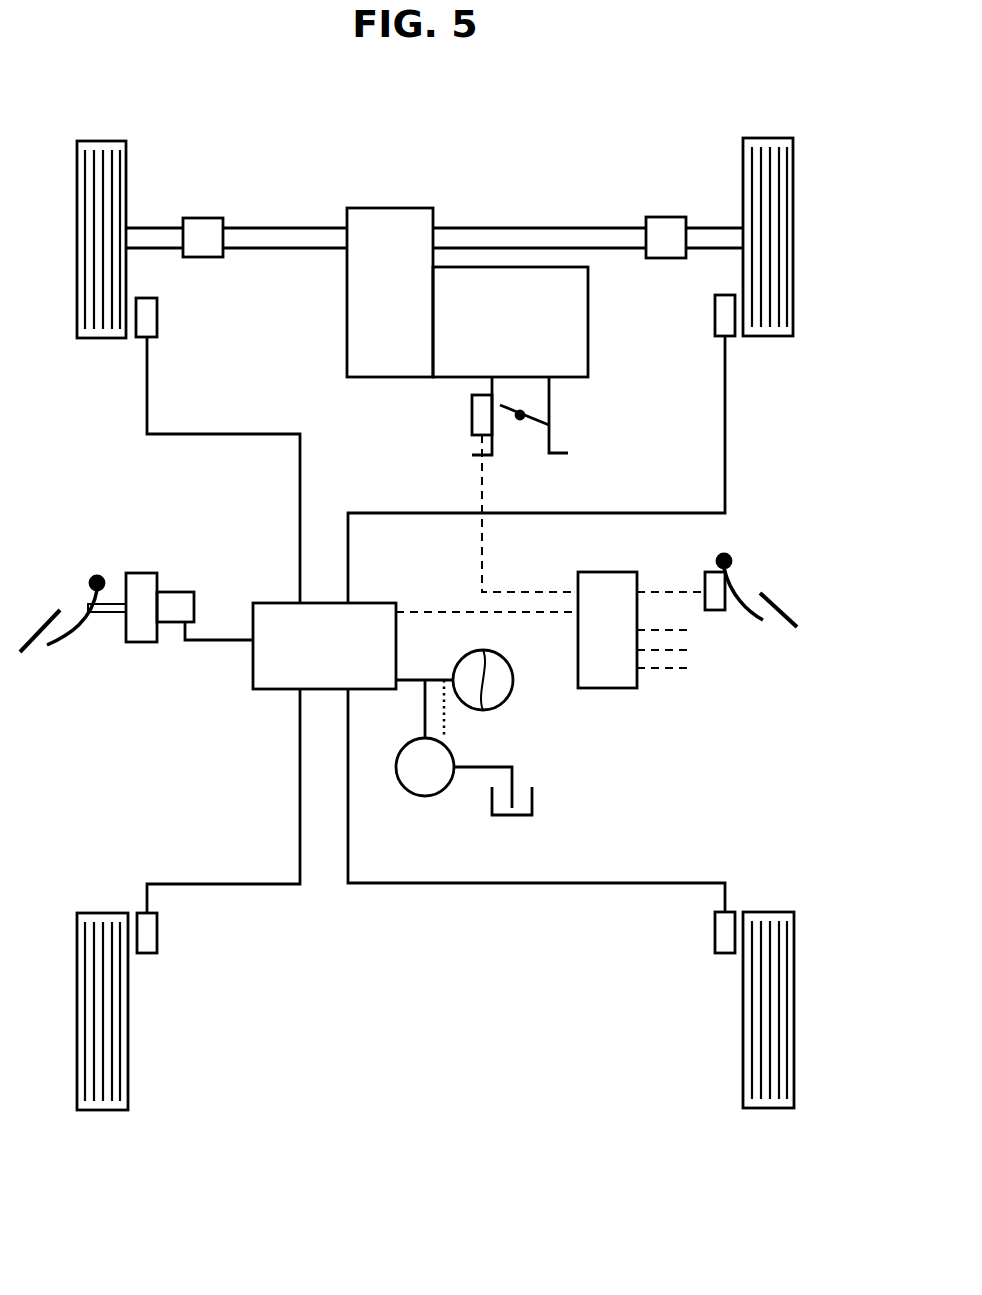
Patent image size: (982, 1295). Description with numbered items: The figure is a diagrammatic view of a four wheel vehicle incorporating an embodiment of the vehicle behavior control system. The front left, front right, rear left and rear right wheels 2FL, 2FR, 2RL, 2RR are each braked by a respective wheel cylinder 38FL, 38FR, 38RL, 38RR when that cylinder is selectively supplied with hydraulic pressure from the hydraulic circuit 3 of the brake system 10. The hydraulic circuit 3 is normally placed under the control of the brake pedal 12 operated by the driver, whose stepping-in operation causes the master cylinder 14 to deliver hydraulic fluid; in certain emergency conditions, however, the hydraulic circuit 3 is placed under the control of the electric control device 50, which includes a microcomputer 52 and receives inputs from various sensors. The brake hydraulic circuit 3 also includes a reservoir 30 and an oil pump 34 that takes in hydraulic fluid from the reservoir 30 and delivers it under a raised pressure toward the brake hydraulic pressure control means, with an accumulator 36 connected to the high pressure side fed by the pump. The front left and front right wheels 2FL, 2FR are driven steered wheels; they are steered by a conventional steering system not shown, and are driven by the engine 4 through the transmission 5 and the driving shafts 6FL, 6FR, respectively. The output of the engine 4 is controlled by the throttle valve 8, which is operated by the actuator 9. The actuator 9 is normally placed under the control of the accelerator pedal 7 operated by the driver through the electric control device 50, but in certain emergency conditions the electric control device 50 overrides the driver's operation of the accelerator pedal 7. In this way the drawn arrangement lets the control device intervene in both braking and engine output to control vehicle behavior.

The front left wheel 2FL is at (97, 340).
The front right wheel 2FR is at (770, 338).
The rear left wheel 2RL is at (128, 1088).
The rear right wheel 2RR is at (743, 1083).
The driving shaft 6FL is at (312, 228).
The driving shaft 6FR is at (532, 228).
The transmission 5 is at (347, 352).
The engine 4 is at (588, 362).
The actuator 9 is at (472, 418).
The throttle valve 8 is at (527, 418).
The wheel cylinder 38FL is at (157, 318).
The wheel cylinder 38FR is at (715, 300).
The wheel cylinder 38RL is at (157, 940).
The wheel cylinder 38RR is at (715, 935).
The hydraulic circuit 3 is at (273, 603).
The brake system 10 is at (232, 703).
The master cylinder 14 is at (147, 573).
The brake pedal 12 is at (70, 630).
The accumulator 36 is at (514, 688).
The oil pump 34 is at (423, 797).
The reservoir 30 is at (532, 800).
The microcomputer 52 is at (612, 572).
The electric control device 50 is at (640, 700).
The accelerator pedal 7 is at (782, 607).